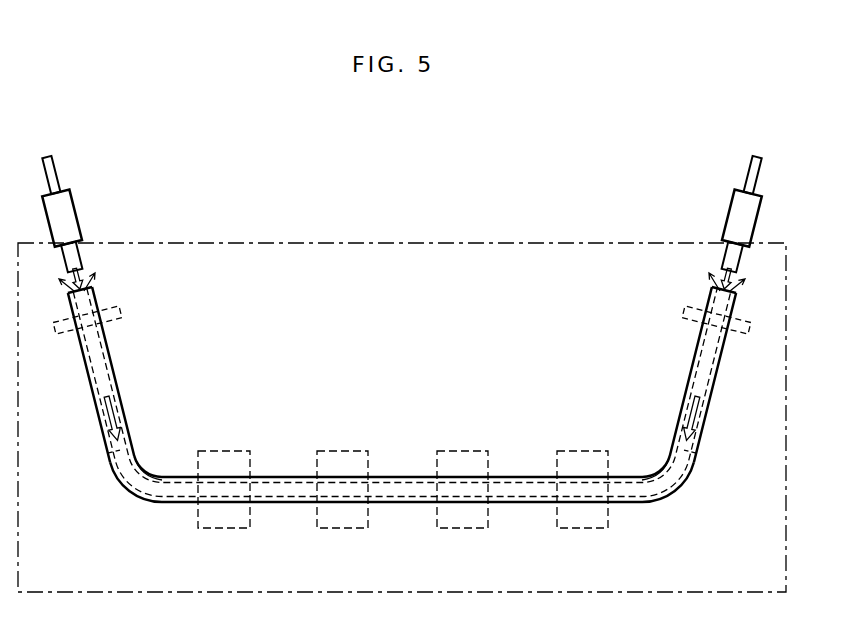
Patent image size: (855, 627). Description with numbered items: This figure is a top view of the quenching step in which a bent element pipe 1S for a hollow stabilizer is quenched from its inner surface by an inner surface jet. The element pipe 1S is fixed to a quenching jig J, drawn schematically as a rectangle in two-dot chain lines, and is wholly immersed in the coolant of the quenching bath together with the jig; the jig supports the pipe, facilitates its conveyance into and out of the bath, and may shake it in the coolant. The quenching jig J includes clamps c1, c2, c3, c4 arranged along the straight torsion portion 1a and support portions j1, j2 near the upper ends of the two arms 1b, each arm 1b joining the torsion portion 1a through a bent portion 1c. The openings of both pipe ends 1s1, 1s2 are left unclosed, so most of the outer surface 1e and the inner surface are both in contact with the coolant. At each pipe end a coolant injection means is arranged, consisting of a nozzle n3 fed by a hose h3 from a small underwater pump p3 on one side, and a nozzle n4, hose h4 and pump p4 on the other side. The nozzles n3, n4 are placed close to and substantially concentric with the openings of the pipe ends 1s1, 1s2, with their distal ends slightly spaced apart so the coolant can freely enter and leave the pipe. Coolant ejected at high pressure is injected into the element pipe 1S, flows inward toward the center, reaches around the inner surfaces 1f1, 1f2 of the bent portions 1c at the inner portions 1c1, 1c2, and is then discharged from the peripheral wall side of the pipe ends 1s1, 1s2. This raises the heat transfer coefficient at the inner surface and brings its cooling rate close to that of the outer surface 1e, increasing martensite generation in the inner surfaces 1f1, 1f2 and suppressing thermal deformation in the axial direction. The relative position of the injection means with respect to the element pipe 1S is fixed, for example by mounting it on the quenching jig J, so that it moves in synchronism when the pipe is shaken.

The quenching jig J is at (345, 243).
The element pipe 1S is at (402, 433).
The torsion portion 1a is at (400, 476).
The arm 1b is at (94, 404).
The bent portion 1c is at (124, 486).
The outer surface 1e is at (138, 463).
The inner portion of bent portion 1c1 is at (160, 478).
The inner portion of bent portion 1c2 is at (644, 478).
The inner surface of bent portion 1f1 is at (168, 502).
The inner surface of bent portion 1f2 is at (636, 502).
The pipe end 1s1 is at (68, 294).
The pipe end 1s2 is at (737, 294).
The support portion j1 is at (122, 311).
The support portion j2 is at (683, 312).
The nozzle n3 is at (63, 263).
The nozzle n4 is at (740, 263).
The small underwater pump p3 is at (75, 203).
The small underwater pump p4 is at (729, 203).
The hose h3 is at (56, 169).
The hose h4 is at (748, 169).
The clamp c1 is at (225, 528).
The clamp c2 is at (343, 528).
The clamp c3 is at (463, 528).
The clamp c4 is at (583, 528).